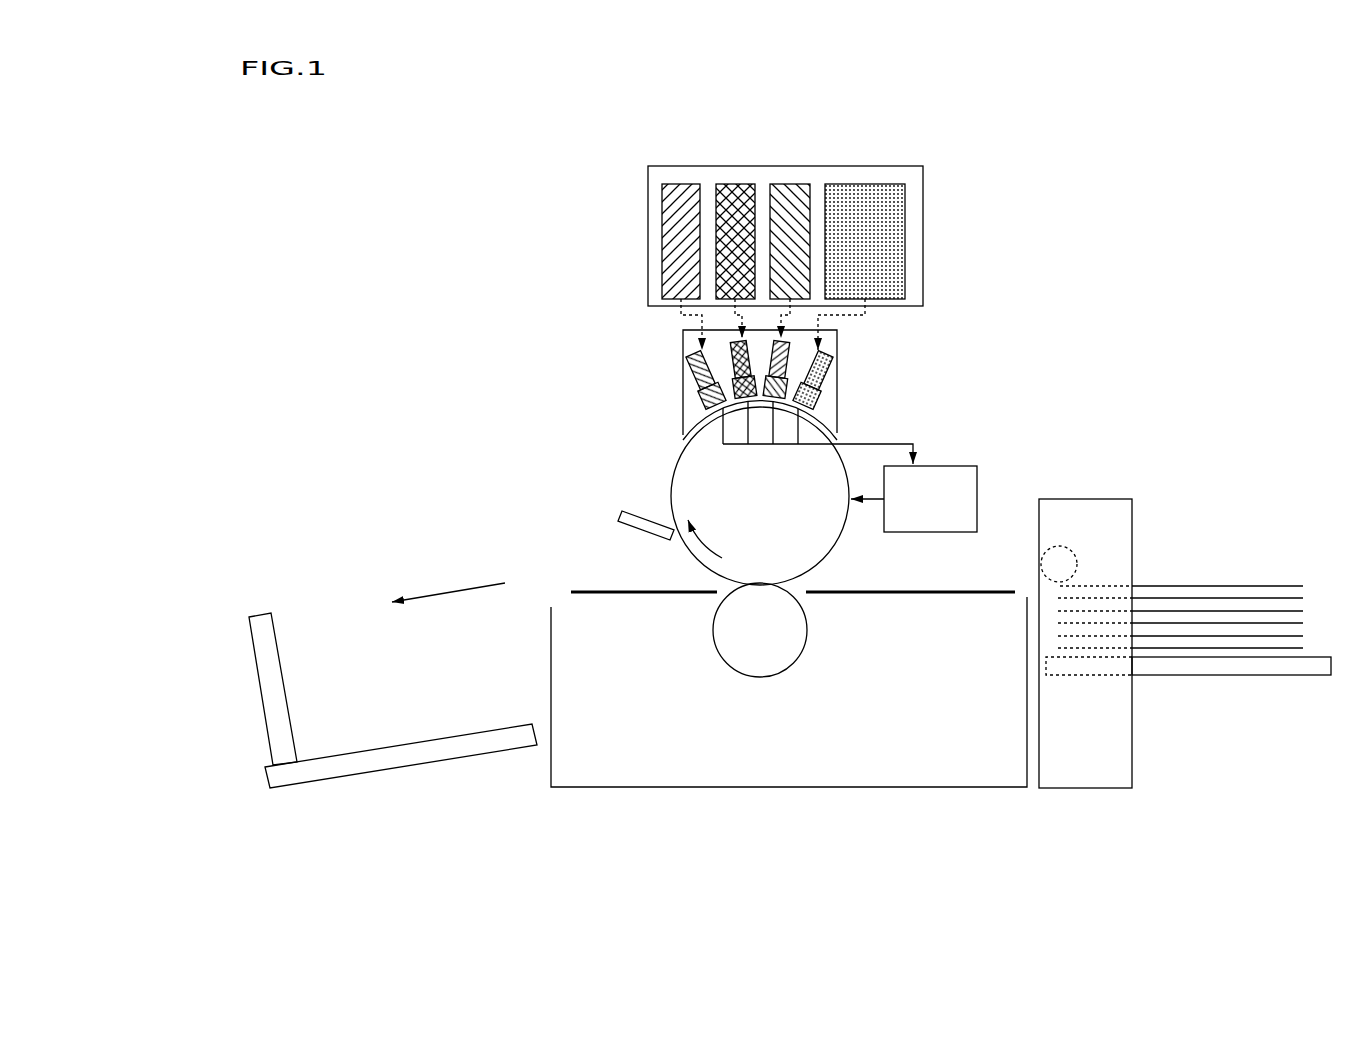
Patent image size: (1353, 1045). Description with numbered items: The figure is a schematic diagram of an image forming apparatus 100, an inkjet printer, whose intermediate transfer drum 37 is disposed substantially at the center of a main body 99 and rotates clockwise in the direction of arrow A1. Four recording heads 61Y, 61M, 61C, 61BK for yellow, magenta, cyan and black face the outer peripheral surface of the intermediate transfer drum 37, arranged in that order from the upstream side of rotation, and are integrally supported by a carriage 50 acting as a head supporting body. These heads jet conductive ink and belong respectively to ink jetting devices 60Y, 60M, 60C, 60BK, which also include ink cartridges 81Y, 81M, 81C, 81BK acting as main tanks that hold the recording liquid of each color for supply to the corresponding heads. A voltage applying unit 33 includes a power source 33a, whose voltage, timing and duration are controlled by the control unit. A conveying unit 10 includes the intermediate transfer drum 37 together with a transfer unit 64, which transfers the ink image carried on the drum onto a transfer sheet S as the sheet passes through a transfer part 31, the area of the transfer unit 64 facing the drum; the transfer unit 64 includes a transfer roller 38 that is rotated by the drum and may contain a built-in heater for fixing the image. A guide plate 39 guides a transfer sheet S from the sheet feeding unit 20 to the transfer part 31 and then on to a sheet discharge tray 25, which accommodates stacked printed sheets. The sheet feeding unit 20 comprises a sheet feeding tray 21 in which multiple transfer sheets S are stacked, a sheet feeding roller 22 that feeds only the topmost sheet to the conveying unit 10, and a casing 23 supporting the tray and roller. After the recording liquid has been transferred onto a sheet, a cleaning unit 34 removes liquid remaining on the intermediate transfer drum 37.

The image forming apparatus 100 is at (1133, 120).
The ink jetting device 60Y is at (740, 103).
The ink jetting device 60M is at (806, 103).
The ink jetting device 60C is at (878, 103).
The ink jetting device 60BK is at (932, 103).
The ink cartridge 81Y is at (672, 184).
The ink cartridge 81M is at (725, 184).
The ink cartridge 81C is at (790, 184).
The ink cartridge 81BK is at (865, 184).
The recording head 61Y is at (700, 380).
The recording head 61M is at (683, 340).
The recording head 61C is at (837, 343).
The recording head 61BK is at (820, 380).
The carriage 50 is at (683, 362).
The intermediate transfer drum 37 is at (680, 455).
The rotation direction arrow A1 is at (706, 544).
The voltage applying unit 33 is at (940, 445).
The power source 33a is at (978, 480).
The cleaning unit 34 is at (615, 512).
The guide plate 39 is at (607, 596).
The transfer part 31 is at (797, 584).
The transfer roller 38 is at (713, 626).
The transfer unit 64 is at (823, 640).
The conveying unit 10 is at (708, 661).
The main body 99 is at (935, 790).
The casing 23 is at (1088, 499).
The sheet feeding roller 22 is at (1047, 551).
The transfer sheet S is at (1197, 586).
The sheet feeding tray 21 is at (1183, 677).
The sheet feeding unit 20 is at (1193, 472).
The sheet discharge tray 25 is at (323, 600).